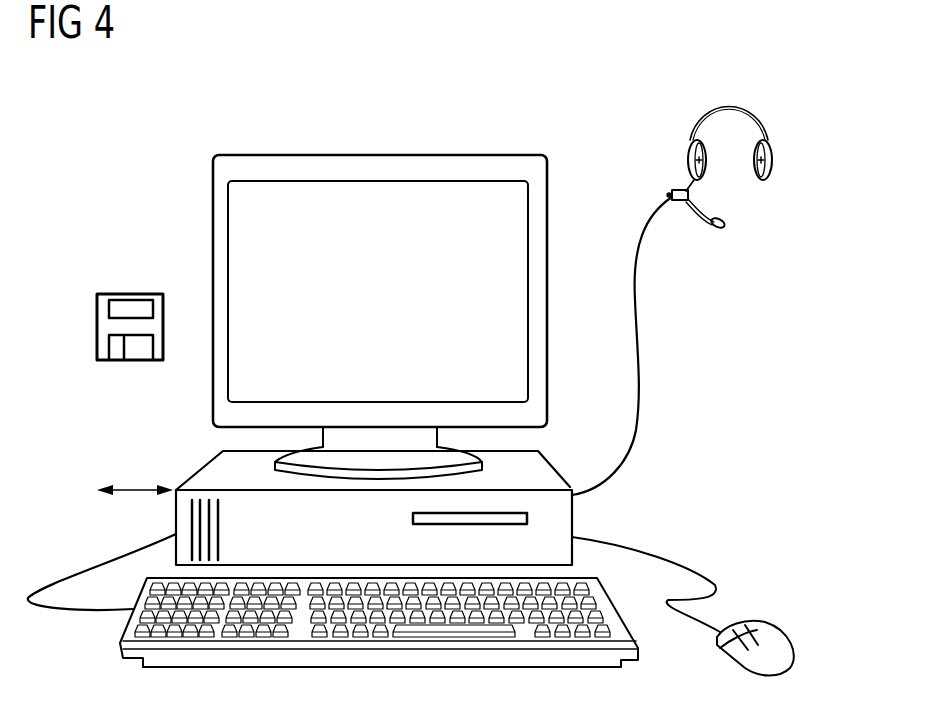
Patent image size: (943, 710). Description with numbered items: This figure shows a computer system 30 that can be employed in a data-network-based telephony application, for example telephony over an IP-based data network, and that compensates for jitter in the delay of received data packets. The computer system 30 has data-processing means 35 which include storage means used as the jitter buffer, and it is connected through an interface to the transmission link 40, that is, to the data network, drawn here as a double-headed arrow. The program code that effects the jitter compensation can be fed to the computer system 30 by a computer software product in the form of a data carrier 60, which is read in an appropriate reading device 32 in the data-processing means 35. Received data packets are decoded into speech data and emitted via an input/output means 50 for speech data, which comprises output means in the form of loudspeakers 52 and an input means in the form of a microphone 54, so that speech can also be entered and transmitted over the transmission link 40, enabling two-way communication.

The computer system 30 is at (240, 126).
The reading device 32 is at (413, 518).
The data-processing means 35 is at (572, 512).
The transmission link 40 is at (135, 487).
The input/output means for speech data 50 is at (705, 269).
The loudspeakers 52 is at (687, 158).
The microphone 54 is at (725, 229).
The data carrier 60 is at (130, 292).